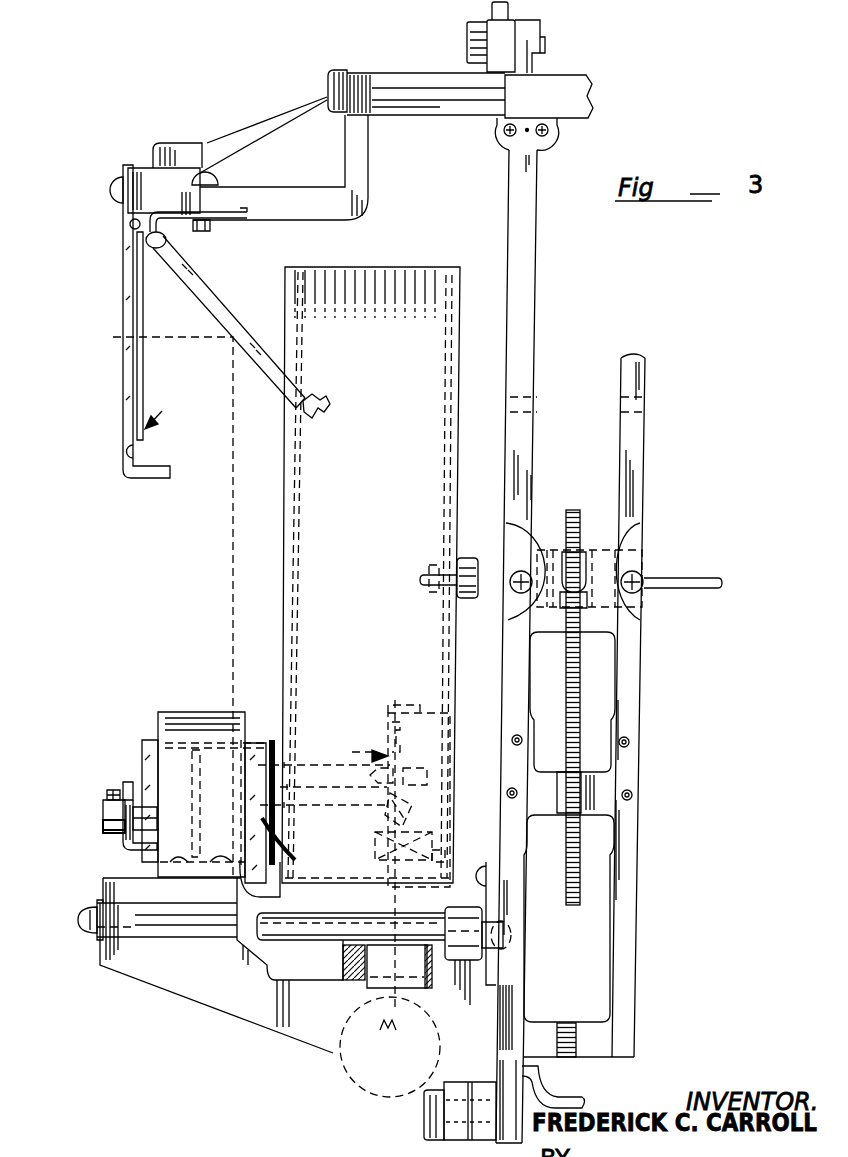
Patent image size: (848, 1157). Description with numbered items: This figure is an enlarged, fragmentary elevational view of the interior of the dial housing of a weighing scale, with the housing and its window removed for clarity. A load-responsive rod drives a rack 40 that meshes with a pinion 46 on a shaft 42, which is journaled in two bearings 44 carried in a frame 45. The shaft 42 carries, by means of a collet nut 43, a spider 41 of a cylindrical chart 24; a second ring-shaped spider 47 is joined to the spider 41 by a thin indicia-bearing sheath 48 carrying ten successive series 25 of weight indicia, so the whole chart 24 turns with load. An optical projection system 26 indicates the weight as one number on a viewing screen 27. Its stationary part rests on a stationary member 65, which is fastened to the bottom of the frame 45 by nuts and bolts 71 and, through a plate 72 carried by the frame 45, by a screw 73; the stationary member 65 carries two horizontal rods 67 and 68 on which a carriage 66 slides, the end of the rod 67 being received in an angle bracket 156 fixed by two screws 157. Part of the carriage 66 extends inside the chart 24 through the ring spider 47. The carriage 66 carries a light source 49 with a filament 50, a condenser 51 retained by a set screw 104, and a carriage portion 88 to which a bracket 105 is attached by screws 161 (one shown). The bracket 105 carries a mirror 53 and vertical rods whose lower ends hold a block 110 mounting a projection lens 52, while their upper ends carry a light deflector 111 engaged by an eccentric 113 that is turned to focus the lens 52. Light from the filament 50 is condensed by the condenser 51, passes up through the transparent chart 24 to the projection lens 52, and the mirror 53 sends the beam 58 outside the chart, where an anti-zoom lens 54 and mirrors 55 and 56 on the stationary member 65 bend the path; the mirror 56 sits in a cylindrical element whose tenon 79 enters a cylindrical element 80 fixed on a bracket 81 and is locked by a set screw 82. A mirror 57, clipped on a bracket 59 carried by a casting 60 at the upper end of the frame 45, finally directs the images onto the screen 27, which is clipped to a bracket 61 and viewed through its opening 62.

The cylindrical chart 24 is at (466, 283).
The successive series of weight indicia 25 is at (343, 290).
The optical projection system 26 is at (364, 756).
The viewing screen 27 is at (163, 407).
The rack 40 is at (573, 890).
The spider 41 is at (445, 424).
The shaft 42 is at (424, 576).
The collet nut 43 is at (468, 558).
The bearings 44 is at (548, 530).
The frame 45 is at (621, 368).
The pinion 46 is at (580, 562).
The second spider 47 is at (303, 525).
The indicia-bearing sheath 48 is at (444, 275).
The light source 49 is at (360, 1087).
The filament 50 is at (392, 1027).
The condenser 51 is at (425, 986).
The projection lens 52 is at (440, 858).
The mirror 53 is at (393, 812).
The anti-zoom lens 54 is at (292, 855).
The mirror 55 is at (192, 810).
The mirror 56 is at (150, 740).
The mirror 57 is at (213, 304).
The light beam 58 is at (233, 570).
The bracket 59 is at (222, 297).
The casting 60 is at (330, 186).
The bracket 61 is at (130, 166).
The opening 62 is at (123, 396).
The stationary member 65 is at (208, 1000).
The carriage 66 is at (268, 962).
The horizontal rod 67 is at (190, 938).
The horizontal rod 68 is at (325, 940).
The nuts and bolts 71 is at (425, 1125).
The plate 72 is at (497, 904).
The screw 73 is at (507, 938).
The tenon 79 is at (108, 798).
The cylindrical element 80 is at (105, 828).
The bracket 81 is at (128, 850).
The set screw 82 is at (114, 790).
The carriage portion 88 is at (310, 770).
The set screw 104 is at (350, 962).
The bracket 105 is at (423, 752).
The block 110 is at (432, 836).
The light deflector 111 is at (395, 700).
The eccentric 113 is at (388, 728).
The angle bracket 156 is at (95, 940).
The screws 157 is at (77, 919).
The screws 161 is at (437, 773).